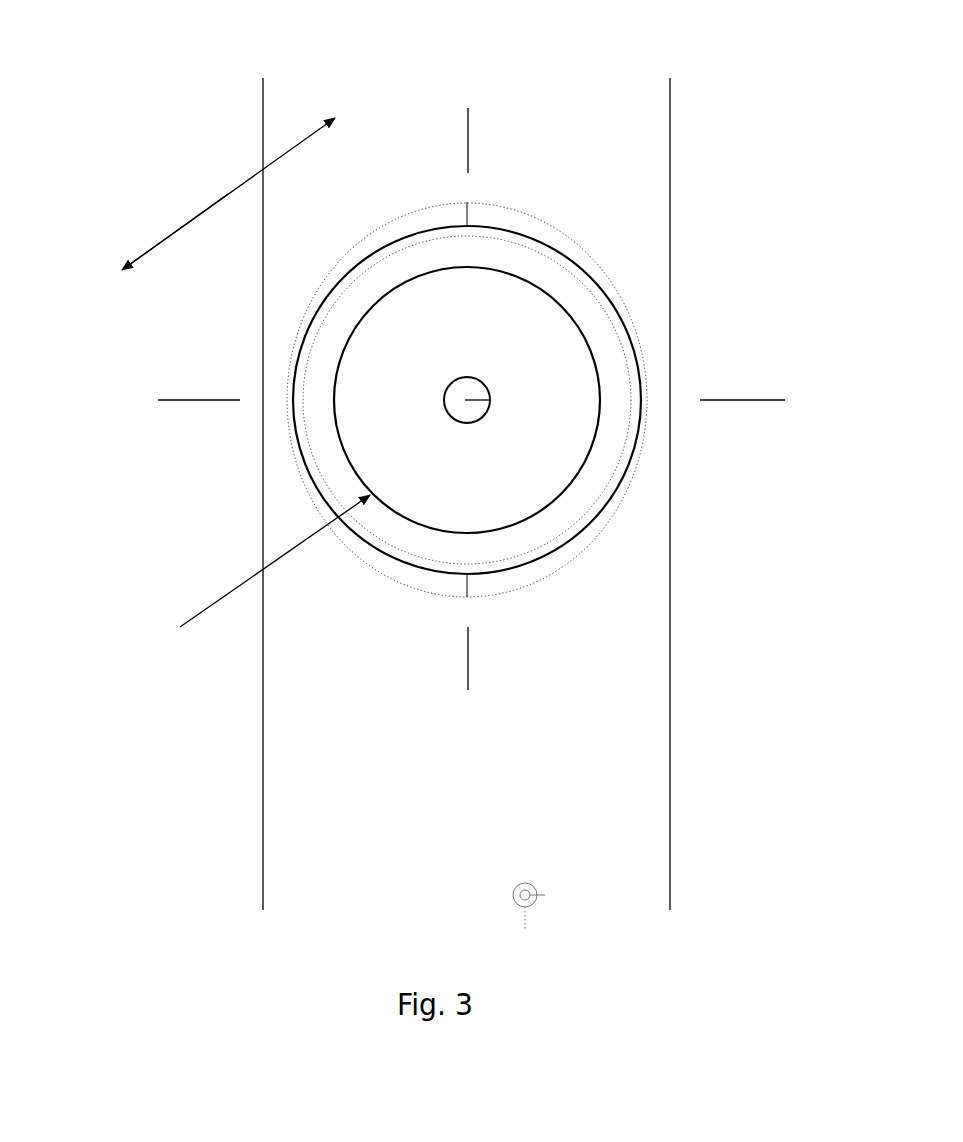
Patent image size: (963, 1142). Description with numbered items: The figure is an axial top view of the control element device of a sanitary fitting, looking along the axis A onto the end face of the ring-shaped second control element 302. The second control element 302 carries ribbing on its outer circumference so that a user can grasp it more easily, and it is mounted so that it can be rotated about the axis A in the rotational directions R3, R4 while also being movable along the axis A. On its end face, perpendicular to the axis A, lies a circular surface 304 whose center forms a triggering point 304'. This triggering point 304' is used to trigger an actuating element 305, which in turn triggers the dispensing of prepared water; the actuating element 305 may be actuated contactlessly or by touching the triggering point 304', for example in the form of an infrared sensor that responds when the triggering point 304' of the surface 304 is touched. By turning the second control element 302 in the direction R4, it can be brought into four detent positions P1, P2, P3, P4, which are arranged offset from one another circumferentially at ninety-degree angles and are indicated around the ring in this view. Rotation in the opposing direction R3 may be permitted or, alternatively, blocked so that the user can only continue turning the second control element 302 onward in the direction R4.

The second control element 302 is at (540, 245).
The circular surface 304 is at (593, 378).
The triggering point 304' is at (271, 444).
The actuating element 305 is at (254, 585).
The axis A is at (490, 398).
The rotational direction R3 is at (300, 143).
The rotational direction R4 is at (145, 253).
The detent position P1 is at (461, 118).
The detent position P2 is at (171, 401).
The detent position P3 is at (467, 684).
The detent position P4 is at (772, 401).